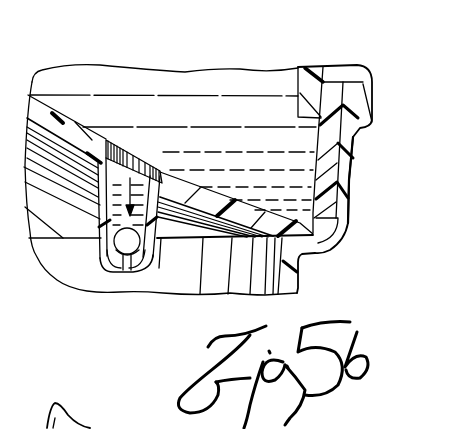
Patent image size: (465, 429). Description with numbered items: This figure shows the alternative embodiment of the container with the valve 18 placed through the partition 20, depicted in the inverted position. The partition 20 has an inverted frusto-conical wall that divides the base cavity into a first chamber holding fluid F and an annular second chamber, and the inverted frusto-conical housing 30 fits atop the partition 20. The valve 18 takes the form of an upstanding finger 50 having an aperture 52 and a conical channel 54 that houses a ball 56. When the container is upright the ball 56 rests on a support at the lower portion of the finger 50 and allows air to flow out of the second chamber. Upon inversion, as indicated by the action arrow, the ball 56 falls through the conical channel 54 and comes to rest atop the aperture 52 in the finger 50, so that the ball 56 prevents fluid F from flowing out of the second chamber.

The fluid F is at (122, 107).
The valve 18 is at (101, 269).
The partition 20 is at (333, 95).
The housing 30 is at (356, 190).
The finger 50 is at (163, 175).
The aperture 52 is at (130, 270).
The conical channel 54 is at (100, 218).
The ball 56 is at (153, 250).